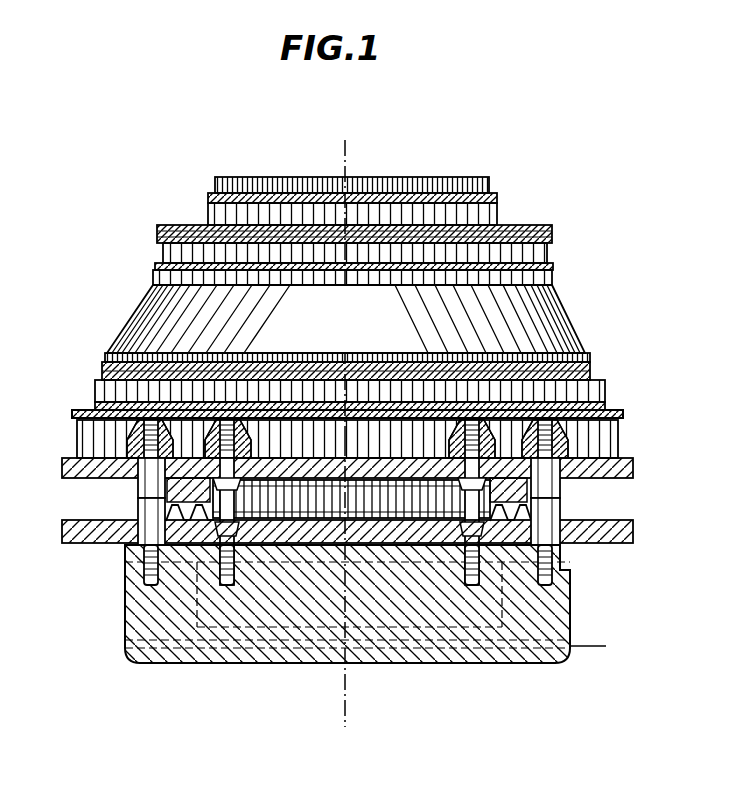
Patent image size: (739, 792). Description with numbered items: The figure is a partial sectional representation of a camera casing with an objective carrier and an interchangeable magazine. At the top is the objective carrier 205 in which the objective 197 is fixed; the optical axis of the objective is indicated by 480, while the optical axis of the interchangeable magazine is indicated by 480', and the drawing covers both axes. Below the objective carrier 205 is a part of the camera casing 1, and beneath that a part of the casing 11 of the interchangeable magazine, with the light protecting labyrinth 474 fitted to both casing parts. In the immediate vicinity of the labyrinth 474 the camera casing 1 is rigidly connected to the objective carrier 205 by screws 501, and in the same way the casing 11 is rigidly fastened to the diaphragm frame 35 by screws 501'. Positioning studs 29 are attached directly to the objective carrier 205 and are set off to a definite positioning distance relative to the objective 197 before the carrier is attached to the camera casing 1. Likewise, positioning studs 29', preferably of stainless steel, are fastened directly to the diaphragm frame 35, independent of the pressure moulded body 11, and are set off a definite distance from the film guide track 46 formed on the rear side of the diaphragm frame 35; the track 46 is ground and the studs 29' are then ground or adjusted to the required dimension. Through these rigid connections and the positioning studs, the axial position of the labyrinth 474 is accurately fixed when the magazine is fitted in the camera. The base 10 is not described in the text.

The camera casing 1 is at (629, 459).
The base 10 is at (125, 647).
The casing of the interchangeable magazine 11 is at (633, 531).
The positioning studs 29 is at (348, 481).
The positioning studs 29' is at (350, 521).
The diaphragm frame 35 is at (570, 592).
The film guide track 46 is at (570, 618).
The objective 197 is at (499, 214).
The objective carrier 205 is at (577, 319).
The light protecting labyrinth 474 is at (462, 507).
The optical axis of the objective 480 is at (344, 276).
The optical axis of the interchangeable magazine 480' is at (346, 598).
The screws 501 is at (347, 439).
The screws 501' is at (354, 574).